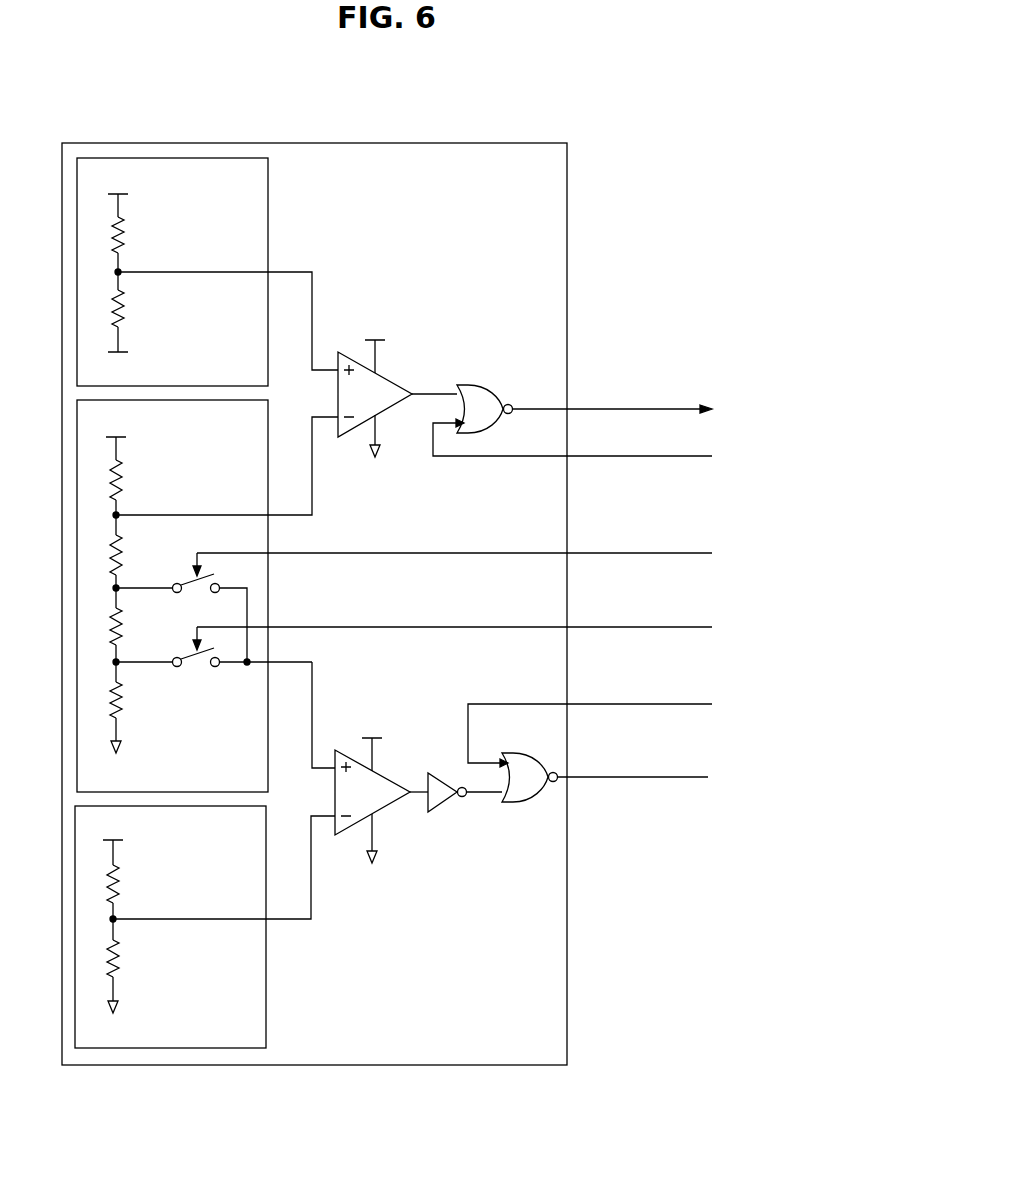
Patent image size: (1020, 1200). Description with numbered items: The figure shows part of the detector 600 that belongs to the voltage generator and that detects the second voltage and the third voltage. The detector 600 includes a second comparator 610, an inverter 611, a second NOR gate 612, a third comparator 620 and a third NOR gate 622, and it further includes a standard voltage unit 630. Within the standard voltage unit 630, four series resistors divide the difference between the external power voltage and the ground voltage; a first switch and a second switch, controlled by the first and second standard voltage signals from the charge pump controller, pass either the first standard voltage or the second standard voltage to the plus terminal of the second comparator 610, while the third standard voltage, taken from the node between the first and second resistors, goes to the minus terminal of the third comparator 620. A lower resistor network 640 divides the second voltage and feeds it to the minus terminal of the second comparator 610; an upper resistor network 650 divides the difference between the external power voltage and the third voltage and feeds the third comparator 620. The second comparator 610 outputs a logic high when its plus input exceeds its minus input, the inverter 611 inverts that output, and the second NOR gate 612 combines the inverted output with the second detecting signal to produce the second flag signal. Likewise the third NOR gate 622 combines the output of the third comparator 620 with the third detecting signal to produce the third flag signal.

The detector 600 is at (320, 143).
The second comparator 610 is at (380, 773).
The inverter 611 is at (443, 805).
The second NOR gate 612 is at (520, 752).
The third comparator 620 is at (392, 376).
The third NOR gate 622 is at (486, 383).
The standard voltage unit 630 is at (269, 588).
The VGH voltage divider 640 is at (267, 987).
The VGL voltage divider 650 is at (269, 196).